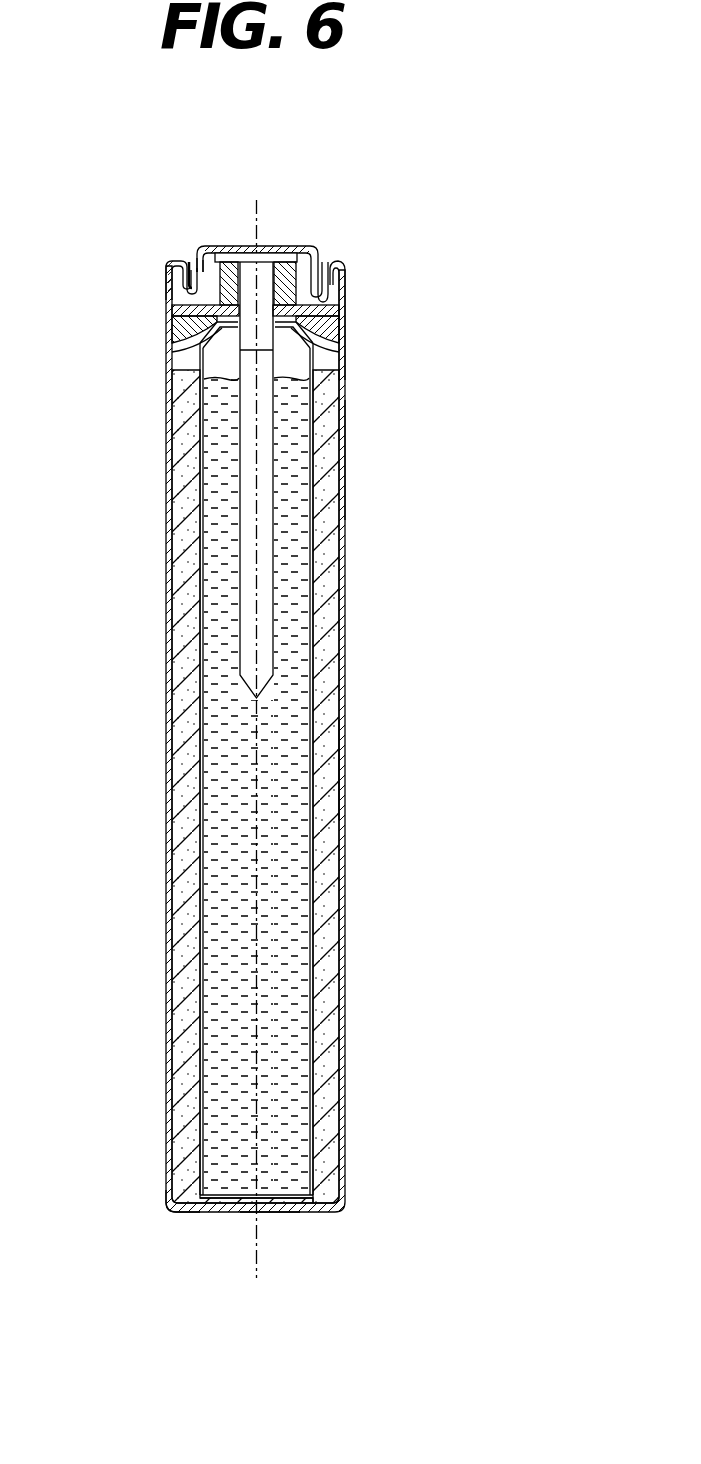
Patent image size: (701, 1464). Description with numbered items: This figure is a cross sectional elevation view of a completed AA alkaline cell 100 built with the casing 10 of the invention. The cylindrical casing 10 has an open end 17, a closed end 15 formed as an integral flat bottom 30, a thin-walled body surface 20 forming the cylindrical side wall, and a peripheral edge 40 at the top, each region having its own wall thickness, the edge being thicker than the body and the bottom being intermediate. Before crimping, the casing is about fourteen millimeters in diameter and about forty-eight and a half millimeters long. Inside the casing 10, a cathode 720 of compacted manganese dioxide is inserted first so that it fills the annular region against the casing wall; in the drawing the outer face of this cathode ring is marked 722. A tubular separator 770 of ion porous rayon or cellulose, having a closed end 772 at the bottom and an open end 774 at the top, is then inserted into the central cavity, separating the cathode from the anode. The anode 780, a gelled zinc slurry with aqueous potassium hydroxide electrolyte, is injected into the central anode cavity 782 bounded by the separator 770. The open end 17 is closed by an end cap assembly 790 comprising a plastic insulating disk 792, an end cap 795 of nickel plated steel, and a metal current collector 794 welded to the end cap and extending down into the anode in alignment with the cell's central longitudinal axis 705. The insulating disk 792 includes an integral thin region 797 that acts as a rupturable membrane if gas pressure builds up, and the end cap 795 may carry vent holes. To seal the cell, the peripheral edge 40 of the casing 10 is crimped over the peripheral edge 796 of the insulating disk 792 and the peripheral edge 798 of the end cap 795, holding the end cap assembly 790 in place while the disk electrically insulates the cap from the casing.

The casing 10 is at (165, 603).
The closed end 15 is at (195, 1213).
The open end 17 is at (193, 262).
The body surface 20 is at (347, 772).
The bottom 30 is at (287, 1212).
The peripheral edge 40 is at (333, 262).
The AA alkaline cell 100 is at (347, 463).
The central longitudinal axis 705 is at (262, 213).
The cathode 720 is at (332, 1168).
The cathode outer surface 722 is at (333, 618).
The separator 770 is at (314, 563).
The closed end of separator 772 is at (222, 1205).
The open end of separator 774 is at (167, 360).
The anode 780 is at (295, 660).
The anode cavity 782 is at (223, 365).
The end cap assembly 790 is at (310, 248).
The plastic insulating disk 792 is at (203, 256).
The current collector 794 is at (265, 270).
The end cap 795 is at (189, 255).
The peripheral edge of insulating disk 796 is at (340, 273).
The thin region 797 is at (335, 352).
The peripheral edge of end cap 798 is at (340, 313).